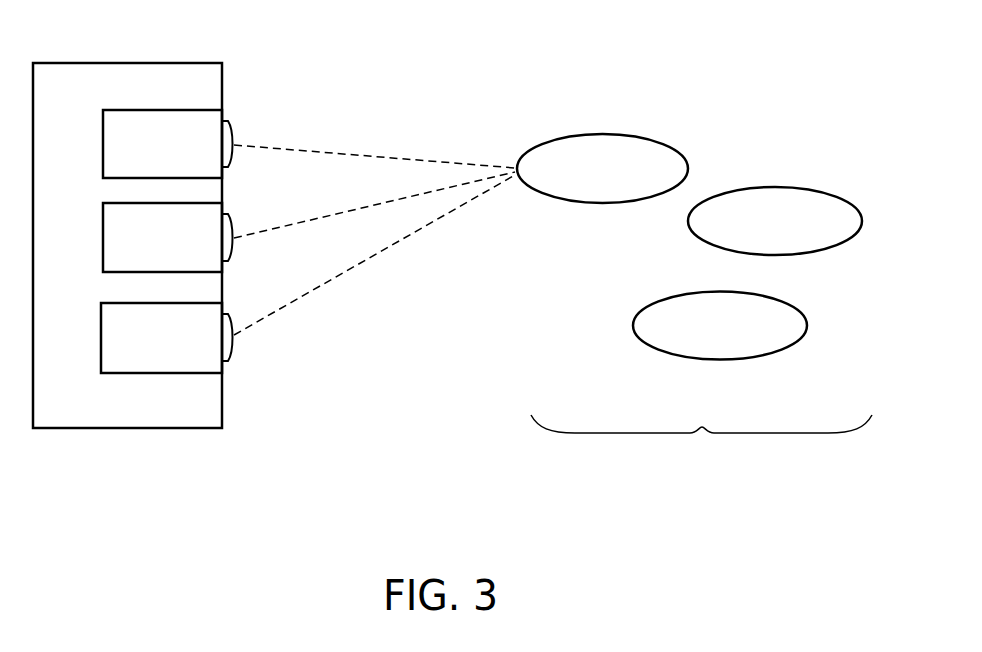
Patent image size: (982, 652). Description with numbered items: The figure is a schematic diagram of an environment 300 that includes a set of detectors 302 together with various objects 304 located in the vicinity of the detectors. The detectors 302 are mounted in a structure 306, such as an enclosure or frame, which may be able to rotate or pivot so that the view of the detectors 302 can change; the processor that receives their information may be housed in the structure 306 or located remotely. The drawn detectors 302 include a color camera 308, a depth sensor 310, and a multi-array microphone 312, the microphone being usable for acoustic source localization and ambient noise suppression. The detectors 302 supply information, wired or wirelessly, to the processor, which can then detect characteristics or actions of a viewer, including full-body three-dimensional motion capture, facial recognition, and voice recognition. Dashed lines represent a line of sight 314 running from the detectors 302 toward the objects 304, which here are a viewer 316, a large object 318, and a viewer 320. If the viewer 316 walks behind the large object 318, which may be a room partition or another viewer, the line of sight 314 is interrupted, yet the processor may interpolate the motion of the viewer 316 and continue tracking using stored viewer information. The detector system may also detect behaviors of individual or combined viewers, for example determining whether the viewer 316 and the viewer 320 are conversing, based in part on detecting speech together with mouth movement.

The environment 300 is at (732, 61).
The set of detectors 302 is at (173, 88).
The objects 304 is at (721, 461).
The structure 306 is at (101, 413).
The color camera 308 is at (177, 153).
The depth sensor 310 is at (177, 250).
The multi-array microphone 312 is at (178, 348).
The line of sight 314 is at (374, 240).
The viewer 316 is at (619, 178).
The large object 318 is at (794, 235).
The viewer 320 is at (736, 338).